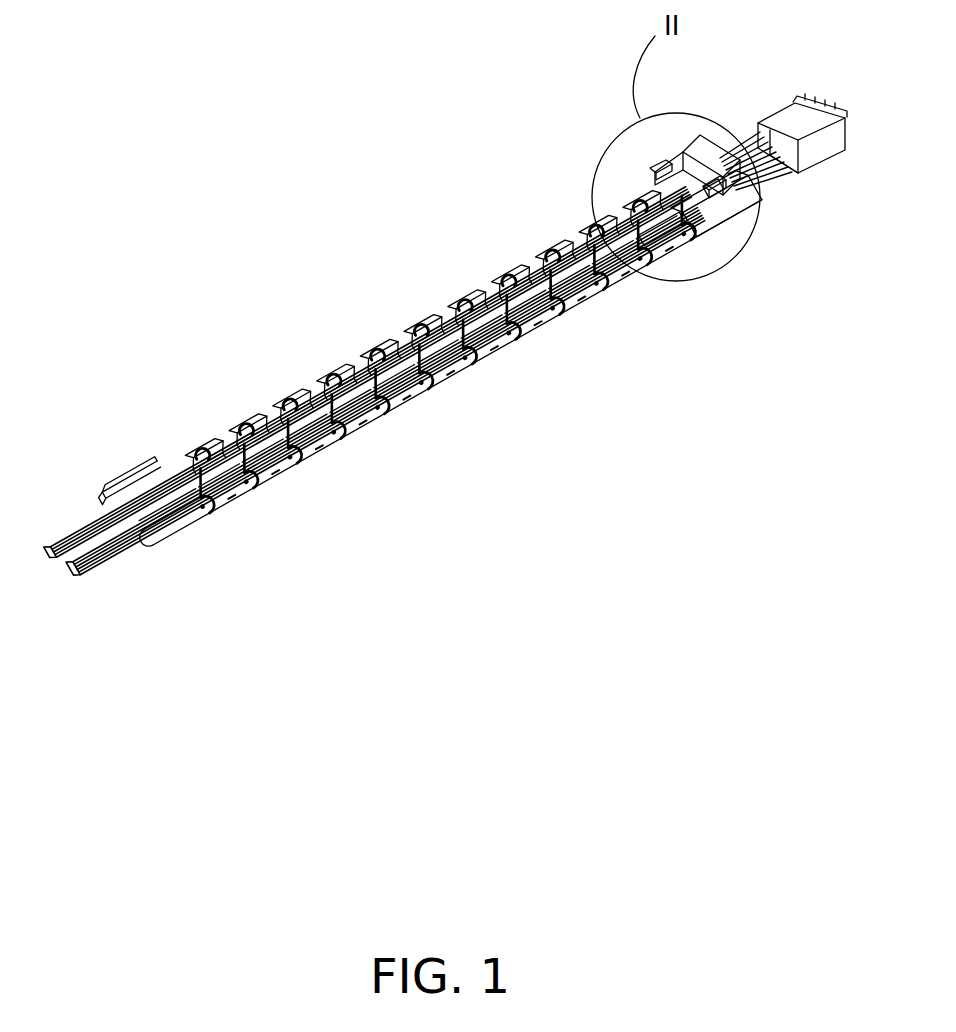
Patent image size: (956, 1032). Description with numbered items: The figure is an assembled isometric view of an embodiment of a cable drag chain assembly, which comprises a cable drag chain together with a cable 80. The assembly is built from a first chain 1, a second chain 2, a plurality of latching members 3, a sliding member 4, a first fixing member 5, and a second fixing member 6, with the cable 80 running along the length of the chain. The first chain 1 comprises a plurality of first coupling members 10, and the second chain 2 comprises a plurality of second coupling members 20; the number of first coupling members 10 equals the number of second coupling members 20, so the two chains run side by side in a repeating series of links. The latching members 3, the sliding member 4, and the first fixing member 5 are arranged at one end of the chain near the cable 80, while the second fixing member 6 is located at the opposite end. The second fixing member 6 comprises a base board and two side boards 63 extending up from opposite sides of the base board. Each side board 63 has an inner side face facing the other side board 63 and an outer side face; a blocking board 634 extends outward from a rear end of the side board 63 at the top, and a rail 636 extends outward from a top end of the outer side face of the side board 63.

The first chain 1 is at (334, 460).
The second chain 2 is at (268, 386).
The latching member 3 is at (653, 240).
The sliding member 4 is at (700, 152).
The first fixing member 5 is at (717, 218).
The second fixing member 6 is at (126, 470).
The first coupling member 10 is at (460, 364).
The second coupling member 20 is at (433, 316).
The side board 63 is at (187, 520).
The cable 80 is at (776, 172).
The blocking board 634 is at (150, 522).
The rail 636 is at (210, 507).